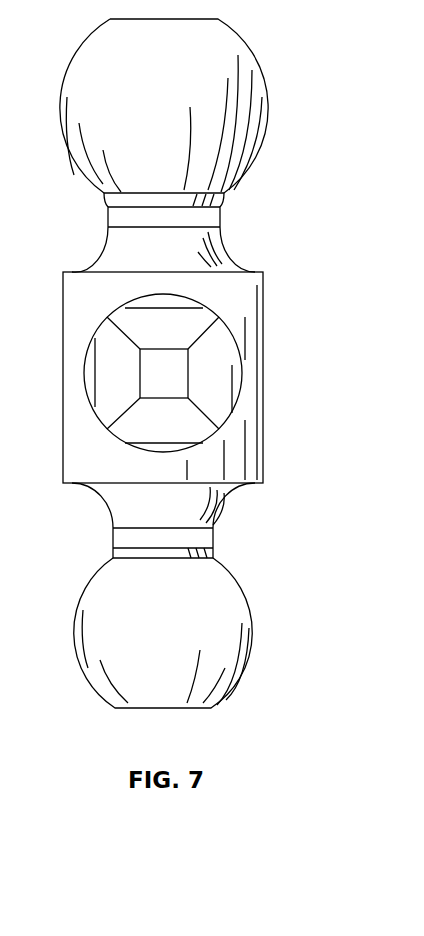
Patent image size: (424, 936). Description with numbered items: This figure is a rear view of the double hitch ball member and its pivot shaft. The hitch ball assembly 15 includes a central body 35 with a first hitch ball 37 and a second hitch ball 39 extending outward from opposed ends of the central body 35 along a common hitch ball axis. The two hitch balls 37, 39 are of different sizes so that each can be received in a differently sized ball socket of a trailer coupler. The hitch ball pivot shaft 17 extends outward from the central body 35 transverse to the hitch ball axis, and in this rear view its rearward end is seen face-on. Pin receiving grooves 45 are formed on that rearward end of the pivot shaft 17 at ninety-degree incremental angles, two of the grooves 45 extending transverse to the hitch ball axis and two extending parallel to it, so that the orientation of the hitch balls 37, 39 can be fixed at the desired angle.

The hitch ball assembly 15 is at (263, 378).
The hitch ball pivot shaft 17 is at (233, 413).
The central body 35 is at (247, 303).
The first hitch ball 37 is at (225, 43).
The second hitch ball 39 is at (227, 657).
The pin receiving grooves 45 is at (115, 388).